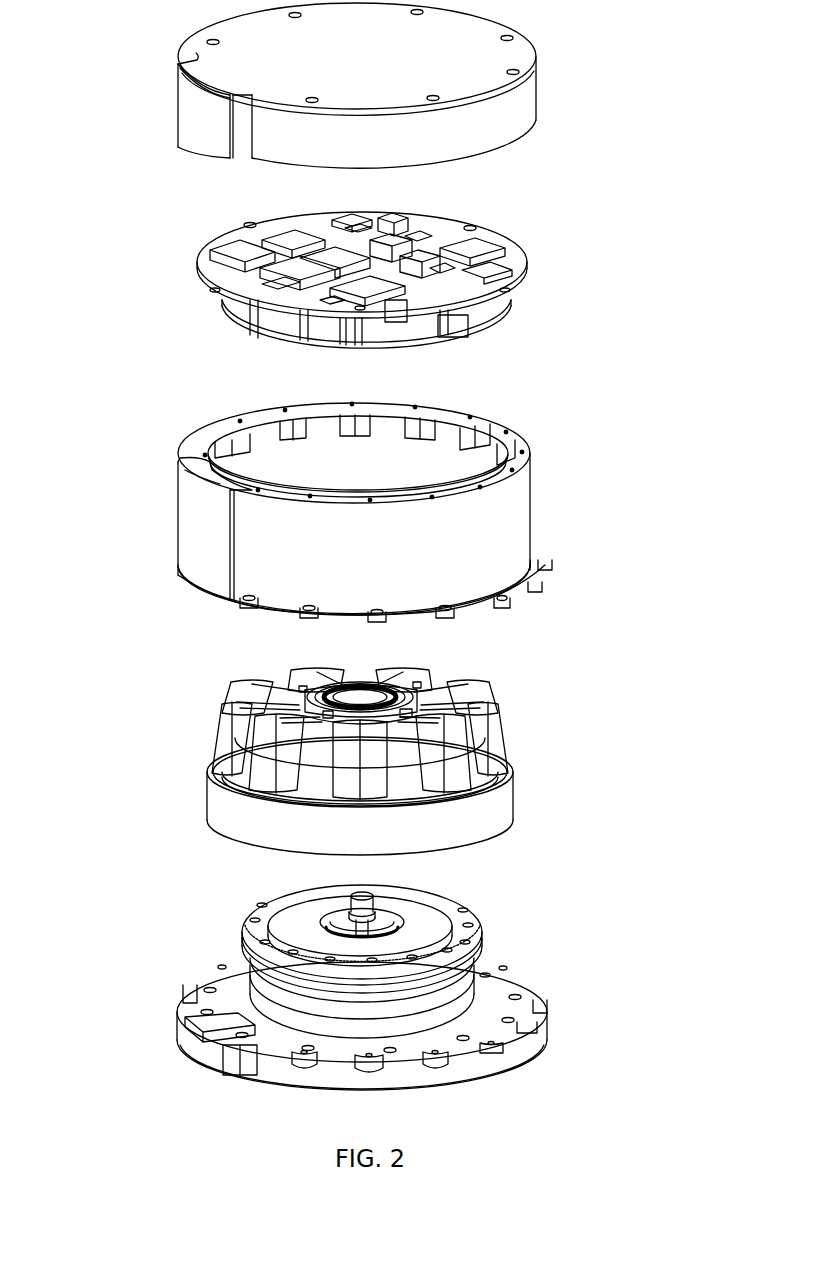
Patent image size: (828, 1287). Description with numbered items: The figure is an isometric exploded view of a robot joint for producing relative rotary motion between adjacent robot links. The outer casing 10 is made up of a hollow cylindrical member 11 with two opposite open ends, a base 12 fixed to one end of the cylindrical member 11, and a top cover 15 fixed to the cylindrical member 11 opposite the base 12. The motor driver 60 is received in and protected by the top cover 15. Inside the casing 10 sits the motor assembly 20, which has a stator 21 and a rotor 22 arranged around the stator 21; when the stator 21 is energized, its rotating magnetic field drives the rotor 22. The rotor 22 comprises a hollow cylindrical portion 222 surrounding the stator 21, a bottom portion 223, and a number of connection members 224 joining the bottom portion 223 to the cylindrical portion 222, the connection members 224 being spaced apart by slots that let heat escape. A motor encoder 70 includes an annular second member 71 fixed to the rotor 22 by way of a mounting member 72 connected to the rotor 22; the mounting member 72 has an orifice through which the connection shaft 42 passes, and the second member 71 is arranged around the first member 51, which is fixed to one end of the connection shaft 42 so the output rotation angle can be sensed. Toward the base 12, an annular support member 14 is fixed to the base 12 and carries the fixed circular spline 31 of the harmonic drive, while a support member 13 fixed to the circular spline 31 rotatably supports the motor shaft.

The top cover 15 is at (433, 135).
The motor driver 60 is at (486, 286).
The casing 10 is at (418, 512).
The cylindrical member 11 is at (456, 552).
The motor assembly 20 is at (364, 758).
The stator 21 is at (441, 764).
The rotor 22 is at (422, 796).
The cylindrical portion 222 is at (504, 790).
The bottom portion 223 is at (297, 721).
The connection members 224 is at (298, 747).
The motor encoder 70 is at (430, 690).
The second member 71 is at (398, 682).
The mounting member 72 is at (410, 713).
The base 12 is at (472, 1023).
The support member 13 is at (310, 917).
The annular support member 14 is at (273, 975).
The circular spline 31 is at (250, 945).
The connection shaft 42 is at (355, 920).
The first member 51 is at (482, 910).